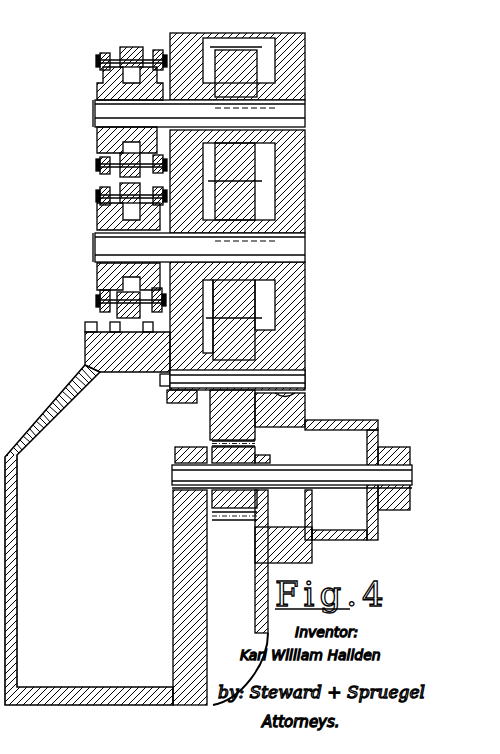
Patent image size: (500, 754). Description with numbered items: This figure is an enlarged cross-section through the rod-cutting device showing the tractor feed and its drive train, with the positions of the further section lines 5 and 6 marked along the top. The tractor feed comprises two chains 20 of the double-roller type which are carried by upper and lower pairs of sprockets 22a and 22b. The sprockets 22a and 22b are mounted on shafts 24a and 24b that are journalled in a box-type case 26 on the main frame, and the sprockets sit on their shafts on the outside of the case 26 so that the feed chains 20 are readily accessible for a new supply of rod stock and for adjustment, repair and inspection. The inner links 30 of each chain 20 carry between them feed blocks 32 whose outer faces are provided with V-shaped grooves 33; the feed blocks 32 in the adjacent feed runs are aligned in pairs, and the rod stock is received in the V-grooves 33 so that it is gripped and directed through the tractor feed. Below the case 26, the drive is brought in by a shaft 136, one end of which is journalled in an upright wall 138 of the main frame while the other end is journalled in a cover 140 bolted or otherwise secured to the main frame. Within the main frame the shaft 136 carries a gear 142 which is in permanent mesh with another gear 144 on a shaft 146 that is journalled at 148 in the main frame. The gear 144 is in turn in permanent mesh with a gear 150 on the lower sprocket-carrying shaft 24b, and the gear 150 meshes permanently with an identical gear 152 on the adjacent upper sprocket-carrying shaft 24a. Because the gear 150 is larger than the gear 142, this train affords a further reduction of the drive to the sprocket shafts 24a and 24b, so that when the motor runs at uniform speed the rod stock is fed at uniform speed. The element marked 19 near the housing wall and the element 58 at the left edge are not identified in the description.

The section line 5- 5 is at (58, 3).
The section line 6- 6 is at (173, 3).
The housing wall 19 is at (15, 450).
The chain 20 is at (100, 53).
The upper sprocket pair 22a is at (110, 88).
The lower sprocket pair 22b is at (105, 225).
The upper sprocket shaft 24a is at (270, 112).
The lower sprocket shaft 24b is at (108, 247).
The box-type case 26 is at (308, 47).
The inner links 30 is at (110, 52).
The feed block 32 is at (99, 62).
The V-shaped groove 33 is at (130, 48).
The guide member 58 is at (4, 164).
The shaft 136 is at (322, 472).
The upright wall 138 is at (180, 522).
The cover 140 is at (370, 425).
The gear 142 is at (233, 515).
The gear 144 is at (222, 412).
The shaft 146 is at (245, 378).
The bearing 148 is at (287, 397).
The gear 150 is at (240, 298).
The gear 152 is at (240, 62).